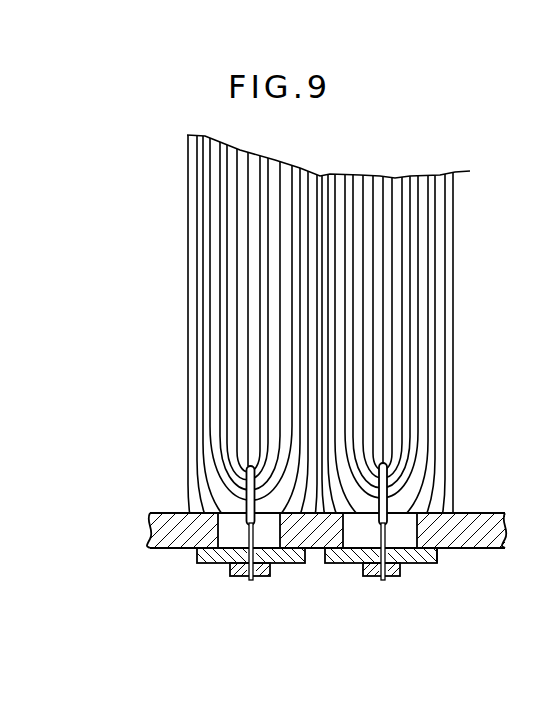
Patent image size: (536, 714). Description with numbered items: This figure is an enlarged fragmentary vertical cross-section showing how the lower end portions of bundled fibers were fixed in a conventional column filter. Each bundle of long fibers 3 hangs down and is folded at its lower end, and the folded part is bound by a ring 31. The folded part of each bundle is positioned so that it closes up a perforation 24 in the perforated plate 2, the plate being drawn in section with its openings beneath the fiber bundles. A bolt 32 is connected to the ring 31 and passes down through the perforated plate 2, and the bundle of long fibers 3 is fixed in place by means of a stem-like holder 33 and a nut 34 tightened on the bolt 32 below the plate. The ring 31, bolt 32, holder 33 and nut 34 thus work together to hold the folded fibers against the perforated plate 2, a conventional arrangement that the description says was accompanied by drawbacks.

The perforated plate 2 is at (160, 548).
The long fibers 3 is at (453, 350).
The perforation 24 is at (226, 524).
The ring 31 is at (415, 492).
The bolt 32 is at (443, 548).
The stem-like holder 33 is at (423, 565).
The nut 34 is at (388, 577).